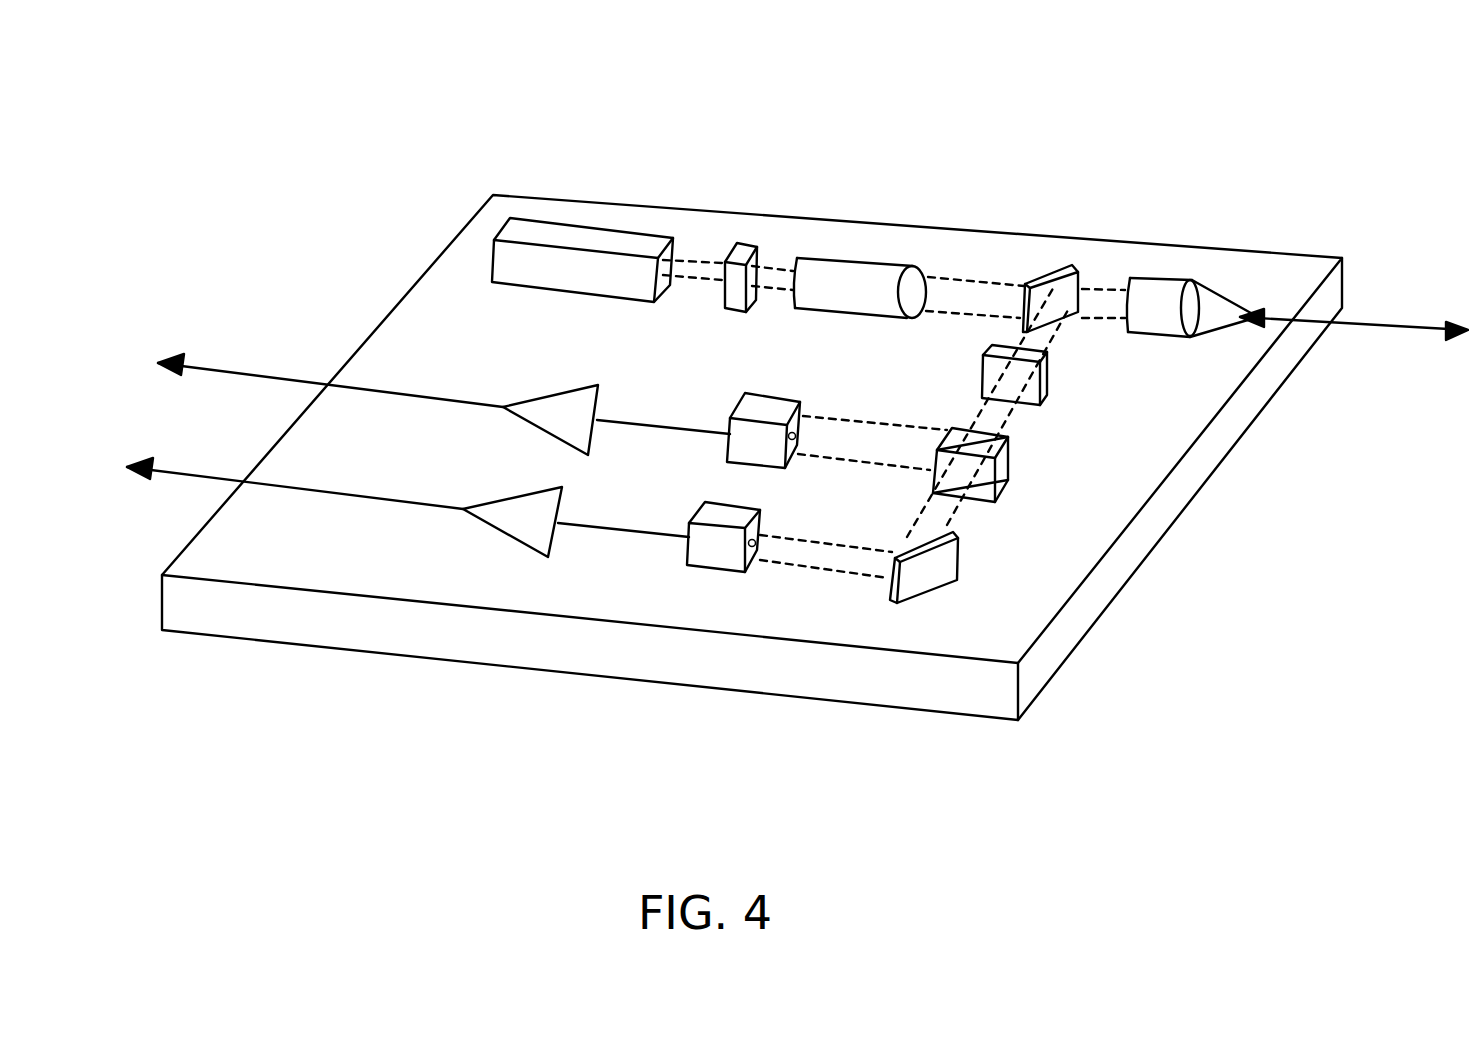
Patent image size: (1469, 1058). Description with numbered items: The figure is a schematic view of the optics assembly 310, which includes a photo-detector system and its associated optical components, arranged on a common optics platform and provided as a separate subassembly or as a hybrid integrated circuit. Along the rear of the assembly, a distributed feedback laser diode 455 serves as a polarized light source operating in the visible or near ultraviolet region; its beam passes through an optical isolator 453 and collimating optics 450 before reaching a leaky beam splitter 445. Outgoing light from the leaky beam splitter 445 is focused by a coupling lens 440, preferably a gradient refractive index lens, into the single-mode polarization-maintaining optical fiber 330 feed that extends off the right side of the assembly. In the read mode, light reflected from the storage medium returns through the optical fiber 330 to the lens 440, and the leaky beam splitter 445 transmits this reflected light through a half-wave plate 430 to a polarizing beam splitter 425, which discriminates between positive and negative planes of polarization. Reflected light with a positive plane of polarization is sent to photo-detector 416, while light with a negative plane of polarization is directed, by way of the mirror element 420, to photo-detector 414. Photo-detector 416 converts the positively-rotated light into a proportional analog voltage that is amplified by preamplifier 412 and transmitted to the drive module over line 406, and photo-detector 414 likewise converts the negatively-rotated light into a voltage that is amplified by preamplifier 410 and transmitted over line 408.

The optics assembly 310 is at (363, 187).
The SMPM optical fiber 330 is at (1358, 327).
The line 406 is at (277, 382).
The line 408 is at (210, 477).
The preamplifier 410 is at (498, 530).
The preamplifier 412 is at (543, 396).
The photo-detector 414 is at (707, 568).
The photo-detector 416 is at (735, 403).
The mirror 420 is at (960, 562).
The polarizing beam splitter 425 is at (1000, 466).
The half-wave plate 430 is at (1045, 378).
The coupling lens 440 is at (1180, 278).
The leaky beam splitter 445 is at (1072, 265).
The collimating optics 450 is at (880, 262).
The optical isolator 453 is at (752, 240).
The laser diode 455 is at (618, 228).